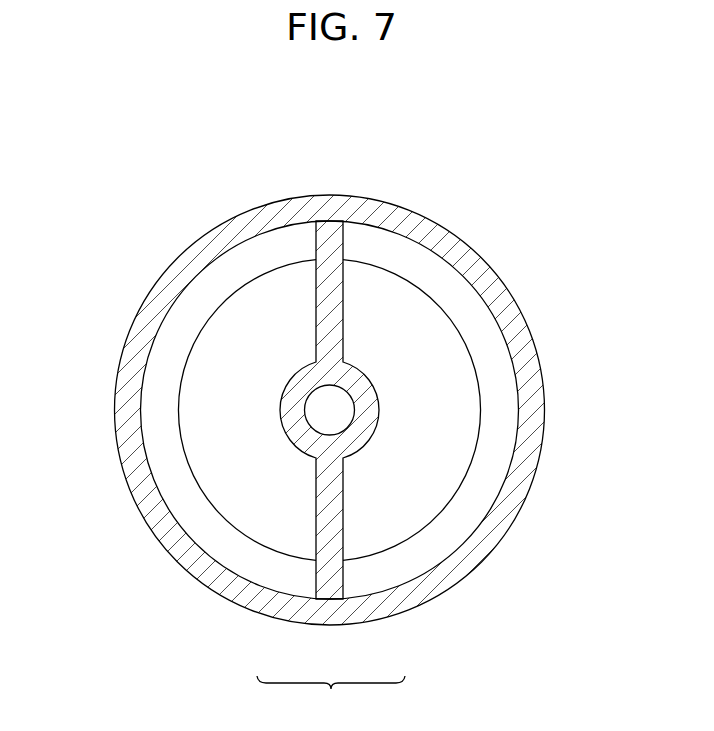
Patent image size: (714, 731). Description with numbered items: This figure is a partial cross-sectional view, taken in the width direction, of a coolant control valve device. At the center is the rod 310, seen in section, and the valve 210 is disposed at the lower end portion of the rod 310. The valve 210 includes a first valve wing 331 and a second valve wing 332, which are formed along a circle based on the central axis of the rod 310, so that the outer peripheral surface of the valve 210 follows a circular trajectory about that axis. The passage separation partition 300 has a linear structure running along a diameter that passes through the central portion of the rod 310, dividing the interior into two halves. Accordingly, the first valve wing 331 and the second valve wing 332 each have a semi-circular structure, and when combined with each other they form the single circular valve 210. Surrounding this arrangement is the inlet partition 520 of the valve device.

The passage separation partition 300 is at (332, 295).
The inlet partition 520 is at (205, 288).
The rod 310 is at (316, 402).
The first valve wing 331 is at (288, 528).
The second valve wing 332 is at (383, 528).
The valve 210 is at (331, 697).